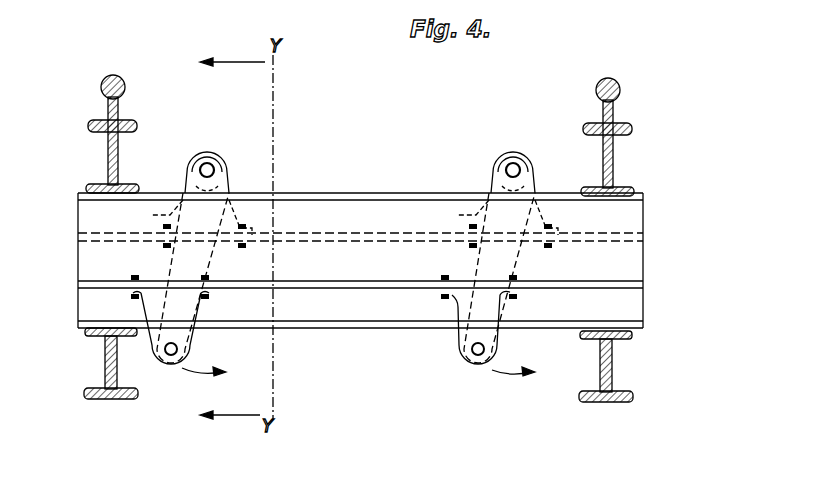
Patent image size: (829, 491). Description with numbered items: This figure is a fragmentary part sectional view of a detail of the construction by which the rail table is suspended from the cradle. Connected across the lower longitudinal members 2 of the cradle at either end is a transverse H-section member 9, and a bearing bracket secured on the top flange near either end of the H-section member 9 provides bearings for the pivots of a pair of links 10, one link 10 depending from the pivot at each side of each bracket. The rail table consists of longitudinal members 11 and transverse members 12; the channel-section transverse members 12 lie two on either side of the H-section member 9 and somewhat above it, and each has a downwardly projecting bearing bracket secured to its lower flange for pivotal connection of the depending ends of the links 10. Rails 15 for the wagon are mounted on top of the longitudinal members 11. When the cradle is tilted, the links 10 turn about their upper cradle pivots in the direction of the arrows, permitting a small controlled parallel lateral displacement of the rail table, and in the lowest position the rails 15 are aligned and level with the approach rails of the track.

The longitudinal member 2 is at (118, 368).
The transverse H-section member 9 is at (78, 300).
The link 10 is at (182, 203).
The longitudinal member 11 is at (373, 130).
The transverse member 12 is at (78, 213).
The rail 15 is at (125, 88).